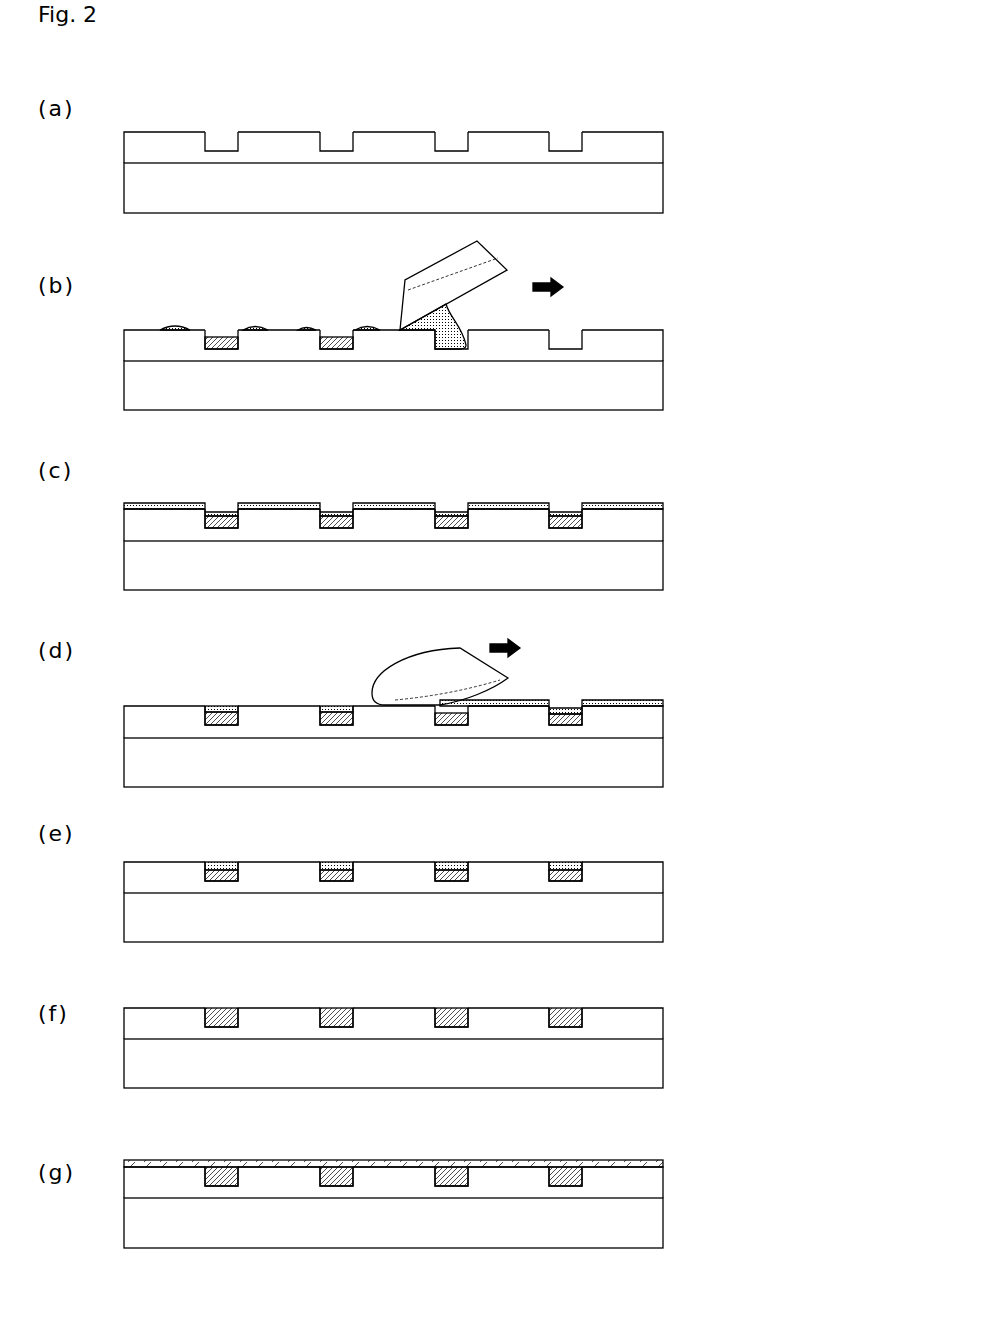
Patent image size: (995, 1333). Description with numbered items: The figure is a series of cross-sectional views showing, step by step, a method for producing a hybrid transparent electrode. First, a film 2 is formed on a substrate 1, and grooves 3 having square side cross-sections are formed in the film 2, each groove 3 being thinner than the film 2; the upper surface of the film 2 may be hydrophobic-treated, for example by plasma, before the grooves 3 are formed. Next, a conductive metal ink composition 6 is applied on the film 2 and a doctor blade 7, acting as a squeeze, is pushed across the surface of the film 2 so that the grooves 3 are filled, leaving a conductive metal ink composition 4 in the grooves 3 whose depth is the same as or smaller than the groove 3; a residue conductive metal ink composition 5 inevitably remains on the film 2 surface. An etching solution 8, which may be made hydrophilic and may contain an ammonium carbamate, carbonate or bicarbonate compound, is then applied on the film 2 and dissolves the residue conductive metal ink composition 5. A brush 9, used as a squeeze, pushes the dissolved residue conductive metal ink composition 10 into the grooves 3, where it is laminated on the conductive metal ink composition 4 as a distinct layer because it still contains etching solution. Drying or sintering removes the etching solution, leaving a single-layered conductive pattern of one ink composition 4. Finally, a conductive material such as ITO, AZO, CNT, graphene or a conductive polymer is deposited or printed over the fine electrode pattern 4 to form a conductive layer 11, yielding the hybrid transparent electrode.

The substrate 1 is at (660, 189).
The film 2 is at (660, 147).
The groove 3 is at (352, 149).
The conductive metal ink composition 4 is at (220, 340).
The residue conductive metal ink composition 5 is at (174, 325).
The conductive metal ink composition 6 is at (449, 316).
The doctor blade 7 is at (485, 257).
The etching solution 8 is at (170, 503).
The brush 9 is at (418, 663).
The dissolved residue conductive metal ink composition 10 is at (221, 866).
The conductive layer 11 is at (628, 1163).